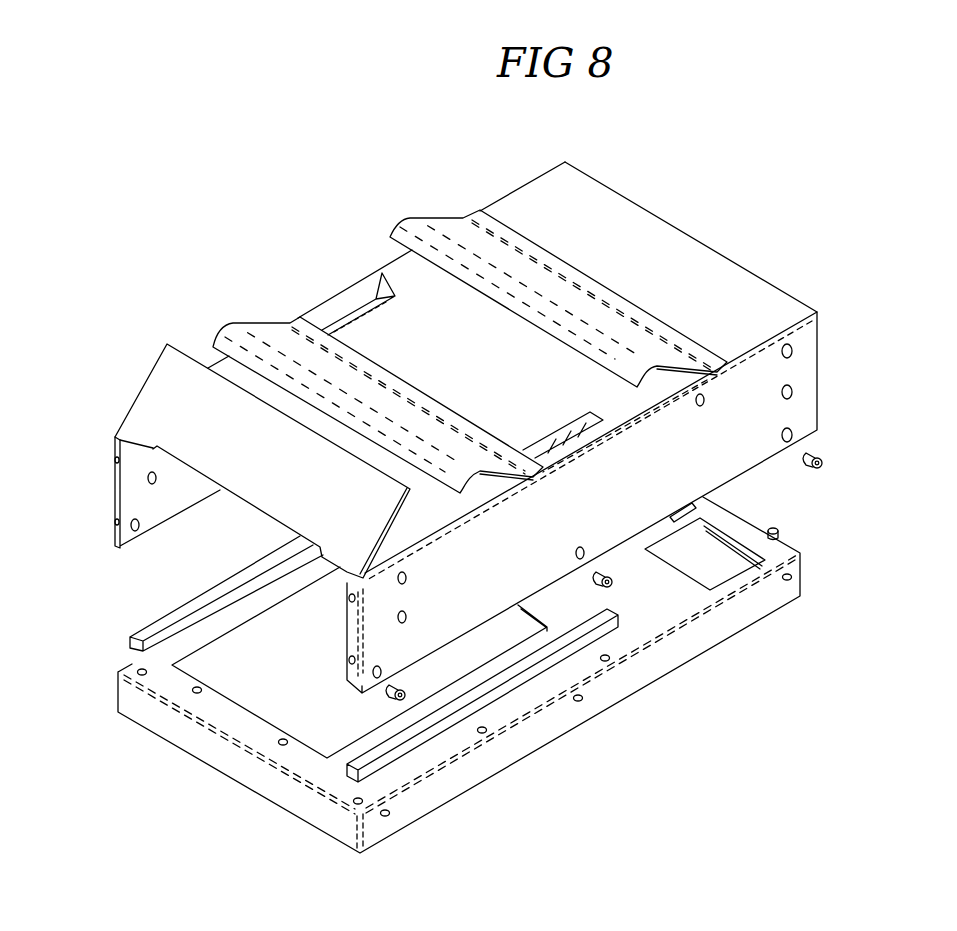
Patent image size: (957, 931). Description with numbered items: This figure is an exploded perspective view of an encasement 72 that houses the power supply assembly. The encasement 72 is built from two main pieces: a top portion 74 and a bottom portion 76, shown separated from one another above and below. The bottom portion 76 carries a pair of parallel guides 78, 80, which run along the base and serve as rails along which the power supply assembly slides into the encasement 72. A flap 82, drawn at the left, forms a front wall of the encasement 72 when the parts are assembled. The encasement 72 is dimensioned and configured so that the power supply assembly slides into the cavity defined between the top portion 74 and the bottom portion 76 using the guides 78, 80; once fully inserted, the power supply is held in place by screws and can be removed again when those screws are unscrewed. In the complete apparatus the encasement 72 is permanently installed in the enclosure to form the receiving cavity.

The encasement 72 is at (422, 200).
The top portion 74 is at (818, 368).
The bottom portion 76 is at (605, 713).
The guide 78 is at (387, 760).
The guide 80 is at (150, 620).
The flap 82 is at (177, 405).